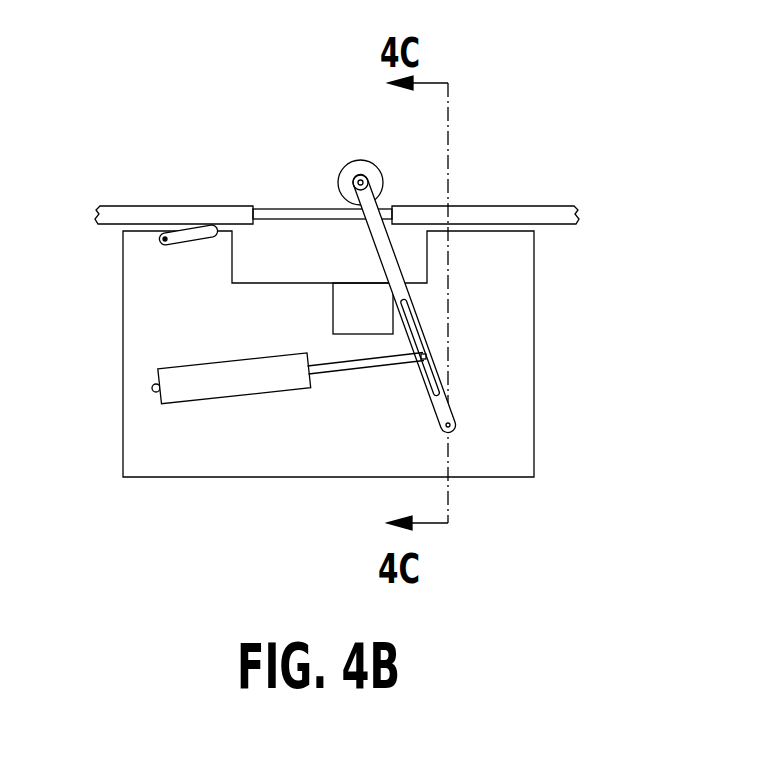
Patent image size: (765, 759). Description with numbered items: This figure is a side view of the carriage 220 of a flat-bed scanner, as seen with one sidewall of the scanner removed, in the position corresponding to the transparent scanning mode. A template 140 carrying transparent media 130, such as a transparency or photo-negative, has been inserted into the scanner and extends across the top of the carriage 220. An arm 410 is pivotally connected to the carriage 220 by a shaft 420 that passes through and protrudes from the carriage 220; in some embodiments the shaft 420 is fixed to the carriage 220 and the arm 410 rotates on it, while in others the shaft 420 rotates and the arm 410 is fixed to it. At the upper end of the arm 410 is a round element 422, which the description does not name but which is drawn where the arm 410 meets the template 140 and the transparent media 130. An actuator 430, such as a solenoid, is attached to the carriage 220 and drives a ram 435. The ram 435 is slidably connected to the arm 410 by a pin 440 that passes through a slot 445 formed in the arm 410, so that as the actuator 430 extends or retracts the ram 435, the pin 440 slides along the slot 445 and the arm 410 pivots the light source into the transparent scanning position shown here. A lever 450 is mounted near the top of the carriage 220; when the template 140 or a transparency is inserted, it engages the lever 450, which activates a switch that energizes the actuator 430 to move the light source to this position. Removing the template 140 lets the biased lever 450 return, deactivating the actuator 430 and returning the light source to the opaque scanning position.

The transparent media 130 is at (286, 207).
The template 140 is at (512, 213).
The carriage 220 is at (195, 465).
The arm 410 is at (390, 262).
The shaft 420 is at (453, 432).
The pulley 422 is at (373, 170).
The actuator 430 is at (181, 394).
The ram 435 is at (330, 372).
The pin 440 is at (425, 357).
The slot 445 is at (437, 393).
The lever 450 is at (177, 245).